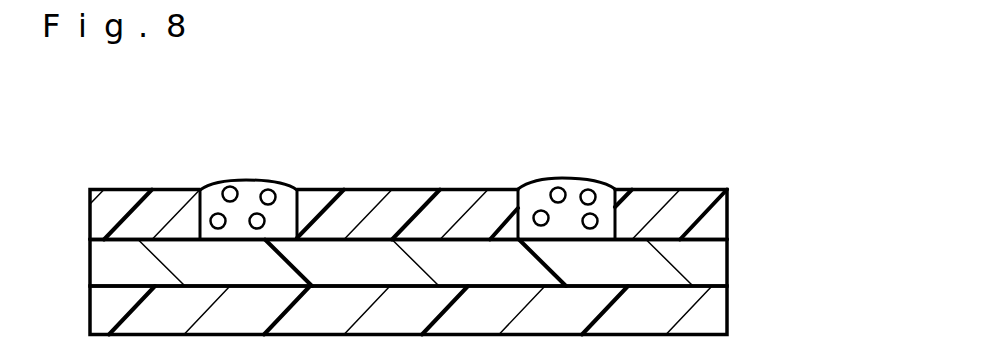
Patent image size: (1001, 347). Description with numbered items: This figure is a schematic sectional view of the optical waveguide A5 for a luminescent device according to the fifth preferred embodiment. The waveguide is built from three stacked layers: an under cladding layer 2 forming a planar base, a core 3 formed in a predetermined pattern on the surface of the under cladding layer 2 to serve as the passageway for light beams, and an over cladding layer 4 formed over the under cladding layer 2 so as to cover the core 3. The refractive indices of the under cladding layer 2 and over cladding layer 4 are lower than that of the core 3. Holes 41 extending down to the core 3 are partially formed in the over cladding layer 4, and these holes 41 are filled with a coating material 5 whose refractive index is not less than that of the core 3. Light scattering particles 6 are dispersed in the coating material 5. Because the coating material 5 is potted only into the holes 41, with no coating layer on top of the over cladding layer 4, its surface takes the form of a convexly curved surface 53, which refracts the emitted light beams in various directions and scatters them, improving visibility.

The under cladding layer 2 is at (712, 300).
The core 3 is at (712, 267).
The over cladding layer 4 is at (468, 178).
The holes 41 is at (291, 213).
The coating material 5 is at (387, 172).
The convexly curved surface 53 is at (240, 180).
The light scattering particles 6 is at (250, 212).
The optical waveguide for a luminescent device A5 is at (516, 221).